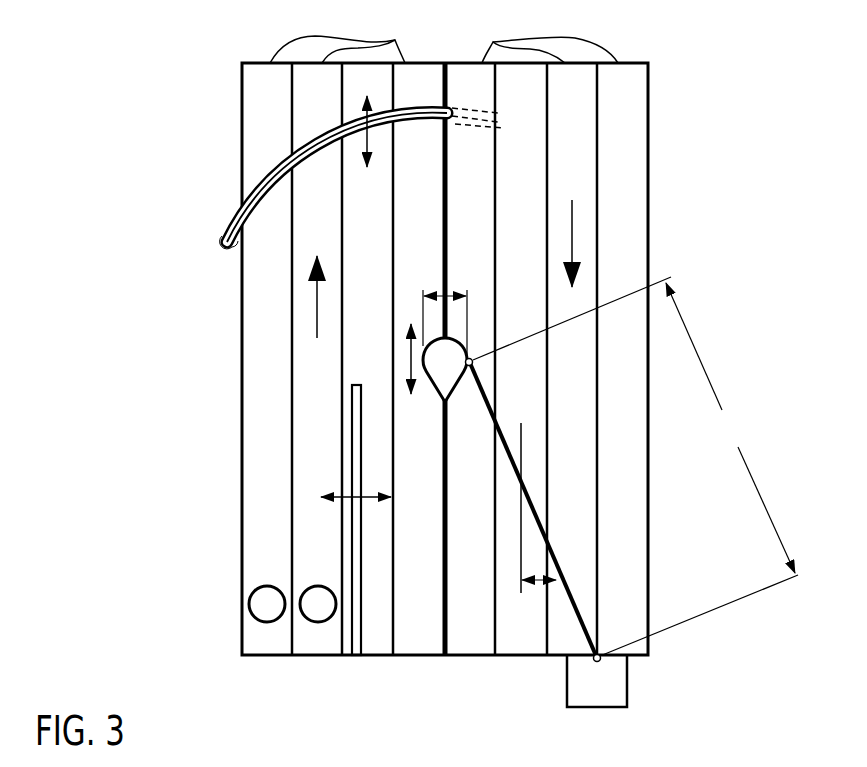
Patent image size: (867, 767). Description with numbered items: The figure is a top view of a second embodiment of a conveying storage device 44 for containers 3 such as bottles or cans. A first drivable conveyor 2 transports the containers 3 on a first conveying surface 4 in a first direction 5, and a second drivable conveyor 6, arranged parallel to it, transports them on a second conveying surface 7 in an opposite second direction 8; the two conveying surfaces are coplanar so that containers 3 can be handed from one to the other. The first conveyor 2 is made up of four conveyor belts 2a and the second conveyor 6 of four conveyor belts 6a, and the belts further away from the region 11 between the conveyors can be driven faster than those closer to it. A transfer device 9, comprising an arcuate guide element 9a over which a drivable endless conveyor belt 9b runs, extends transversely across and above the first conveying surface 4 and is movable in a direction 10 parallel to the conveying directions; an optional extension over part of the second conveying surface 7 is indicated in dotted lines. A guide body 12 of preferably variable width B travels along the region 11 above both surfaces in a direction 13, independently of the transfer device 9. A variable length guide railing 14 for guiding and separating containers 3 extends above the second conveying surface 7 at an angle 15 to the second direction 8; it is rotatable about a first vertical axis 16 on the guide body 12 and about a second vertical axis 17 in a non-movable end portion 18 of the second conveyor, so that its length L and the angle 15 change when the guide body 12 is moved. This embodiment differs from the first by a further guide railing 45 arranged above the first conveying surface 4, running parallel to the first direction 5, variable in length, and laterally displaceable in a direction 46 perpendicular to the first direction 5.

The first drivable conveyor 2 is at (266, 51).
The conveyor belts 2a is at (366, 37).
The containers 3 is at (267, 622).
The first conveying surface 4 is at (300, 462).
The first direction 5 is at (310, 308).
The second drivable conveyor 6 is at (622, 51).
The conveyor belts 6a is at (523, 37).
The second conveying surface 7 is at (582, 402).
The second direction 8 is at (573, 236).
The transfer device 9 is at (266, 172).
The arcuate guide element 9a is at (234, 234).
The drivable endless conveyor belt 9b is at (258, 244).
The direction 10 is at (366, 116).
The region 11 is at (448, 62).
The guide body 12 is at (440, 391).
The direction 13 is at (405, 362).
The variable length guide railing 14 is at (574, 600).
The first vertical axis 16 is at (474, 359).
The second vertical axis 17 is at (592, 661).
The non-movable end portion 18 is at (628, 680).
The conveying storage device 44 is at (771, 47).
The further guide railing 45 is at (361, 588).
The direction 46 is at (368, 493).
The angle 15 is at (546, 578).
The width B is at (450, 289).
The length L is at (635, 466).